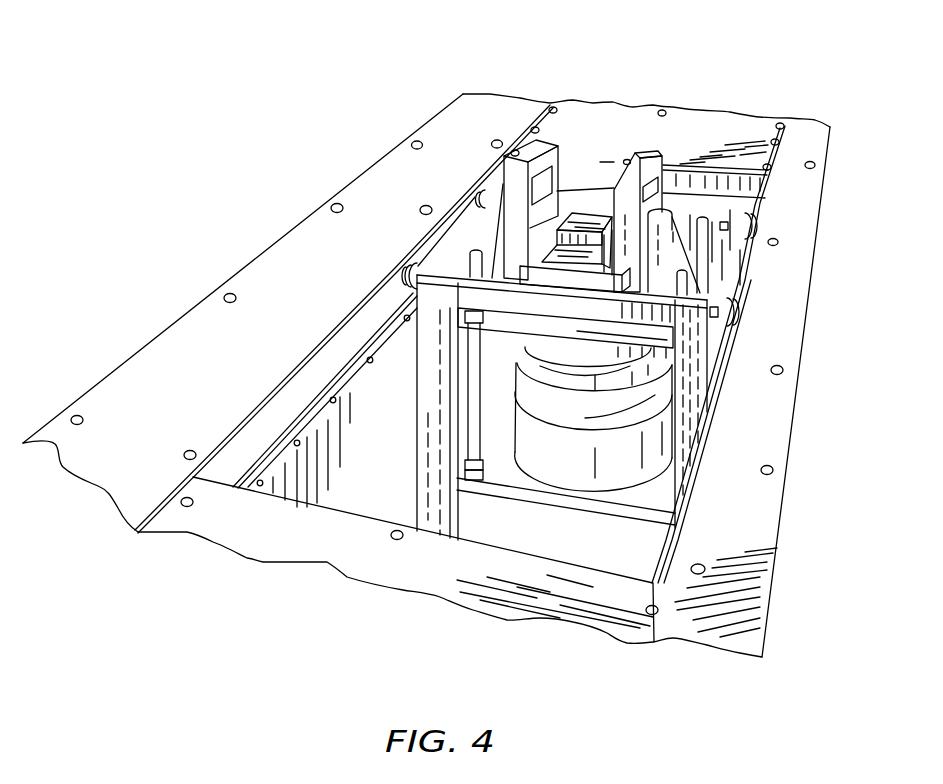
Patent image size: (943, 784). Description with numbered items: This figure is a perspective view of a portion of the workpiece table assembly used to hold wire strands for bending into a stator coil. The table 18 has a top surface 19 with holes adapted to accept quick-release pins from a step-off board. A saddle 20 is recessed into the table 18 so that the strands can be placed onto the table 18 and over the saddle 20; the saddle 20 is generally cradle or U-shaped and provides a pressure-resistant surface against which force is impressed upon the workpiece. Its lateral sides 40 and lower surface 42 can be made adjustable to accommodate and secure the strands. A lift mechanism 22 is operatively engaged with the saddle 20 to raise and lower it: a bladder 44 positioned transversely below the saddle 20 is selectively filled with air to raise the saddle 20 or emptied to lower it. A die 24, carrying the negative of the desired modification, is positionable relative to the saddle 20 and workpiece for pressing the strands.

The table 18 is at (442, 130).
The top surface 19 is at (175, 347).
The saddle 20 is at (513, 222).
The lift mechanism 22 is at (622, 461).
The die 24 is at (588, 220).
The lateral sides 40 is at (637, 158).
The lower surface 42 is at (508, 337).
The bladder 44 is at (572, 412).